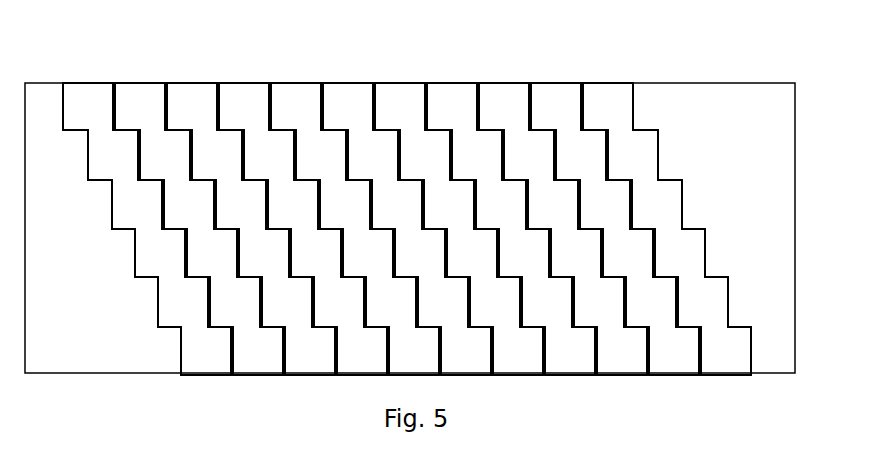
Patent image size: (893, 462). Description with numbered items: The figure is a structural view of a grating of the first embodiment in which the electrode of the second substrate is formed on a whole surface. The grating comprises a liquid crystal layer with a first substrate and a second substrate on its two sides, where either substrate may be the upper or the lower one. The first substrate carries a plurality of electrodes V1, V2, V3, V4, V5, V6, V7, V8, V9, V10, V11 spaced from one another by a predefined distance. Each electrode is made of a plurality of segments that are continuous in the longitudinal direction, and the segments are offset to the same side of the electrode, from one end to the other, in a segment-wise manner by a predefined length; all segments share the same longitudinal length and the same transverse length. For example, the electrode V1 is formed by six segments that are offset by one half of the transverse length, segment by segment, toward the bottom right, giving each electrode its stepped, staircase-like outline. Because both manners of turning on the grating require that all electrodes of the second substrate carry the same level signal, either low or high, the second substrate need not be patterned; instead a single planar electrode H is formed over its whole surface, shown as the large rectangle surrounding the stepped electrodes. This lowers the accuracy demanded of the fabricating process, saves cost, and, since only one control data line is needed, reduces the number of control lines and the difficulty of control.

The planar electrode H is at (431, 228).
The electrode V1 is at (147, 209).
The electrode V2 is at (199, 209).
The electrode V3 is at (251, 209).
The electrode V4 is at (303, 209).
The electrode V5 is at (355, 209).
The electrode V6 is at (407, 209).
The electrode V7 is at (459, 209).
The electrode V8 is at (511, 209).
The electrode V9 is at (563, 209).
The electrode V10 is at (615, 209).
The electrode V11 is at (667, 209).